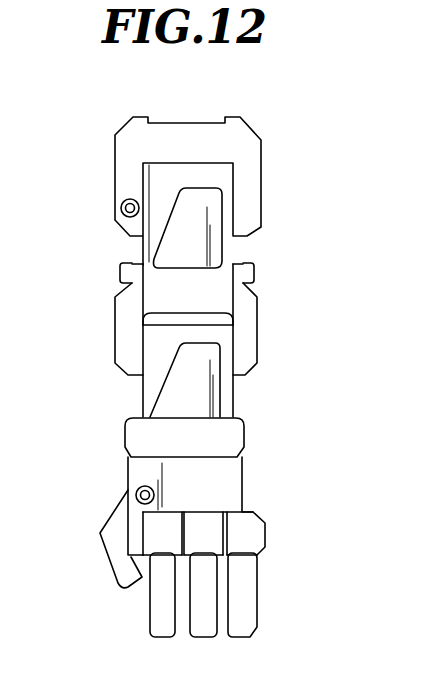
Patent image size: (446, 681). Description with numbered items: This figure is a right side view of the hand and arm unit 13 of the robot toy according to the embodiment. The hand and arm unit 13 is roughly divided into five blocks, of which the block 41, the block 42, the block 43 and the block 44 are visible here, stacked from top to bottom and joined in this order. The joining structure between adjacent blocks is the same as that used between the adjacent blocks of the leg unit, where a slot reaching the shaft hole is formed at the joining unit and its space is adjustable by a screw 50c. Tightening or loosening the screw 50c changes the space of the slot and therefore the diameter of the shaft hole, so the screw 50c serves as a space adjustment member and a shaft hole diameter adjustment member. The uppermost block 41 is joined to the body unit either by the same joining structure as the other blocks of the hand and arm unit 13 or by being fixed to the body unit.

The hand and arm unit 13 is at (195, 113).
The block 41 is at (248, 143).
The block 42 is at (243, 305).
The block 43 is at (240, 435).
The block 44 is at (252, 595).
The screw 50c is at (121, 204).